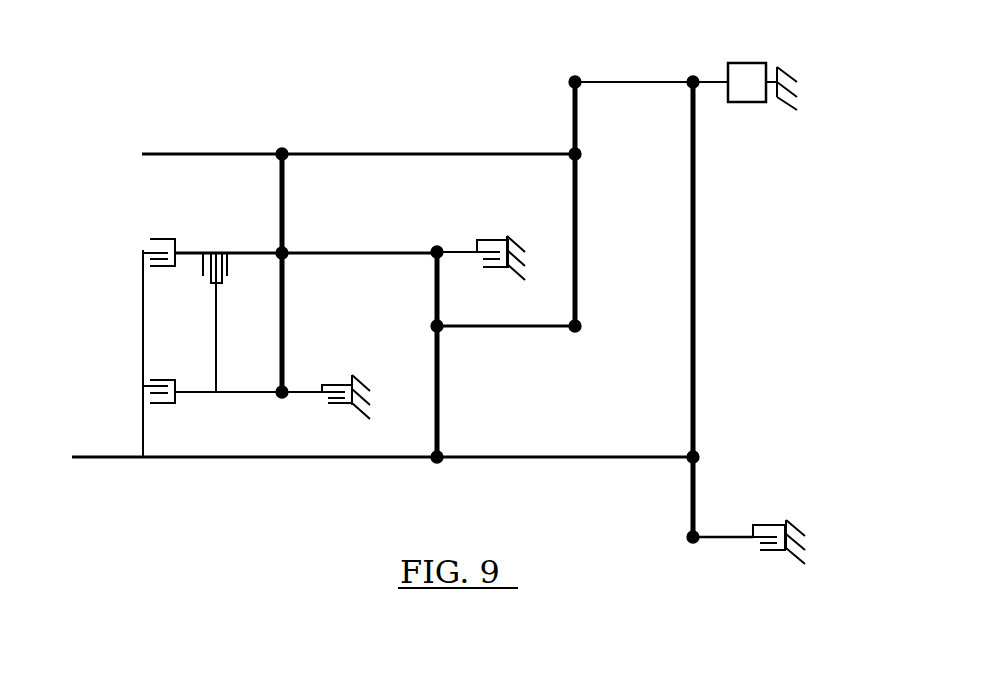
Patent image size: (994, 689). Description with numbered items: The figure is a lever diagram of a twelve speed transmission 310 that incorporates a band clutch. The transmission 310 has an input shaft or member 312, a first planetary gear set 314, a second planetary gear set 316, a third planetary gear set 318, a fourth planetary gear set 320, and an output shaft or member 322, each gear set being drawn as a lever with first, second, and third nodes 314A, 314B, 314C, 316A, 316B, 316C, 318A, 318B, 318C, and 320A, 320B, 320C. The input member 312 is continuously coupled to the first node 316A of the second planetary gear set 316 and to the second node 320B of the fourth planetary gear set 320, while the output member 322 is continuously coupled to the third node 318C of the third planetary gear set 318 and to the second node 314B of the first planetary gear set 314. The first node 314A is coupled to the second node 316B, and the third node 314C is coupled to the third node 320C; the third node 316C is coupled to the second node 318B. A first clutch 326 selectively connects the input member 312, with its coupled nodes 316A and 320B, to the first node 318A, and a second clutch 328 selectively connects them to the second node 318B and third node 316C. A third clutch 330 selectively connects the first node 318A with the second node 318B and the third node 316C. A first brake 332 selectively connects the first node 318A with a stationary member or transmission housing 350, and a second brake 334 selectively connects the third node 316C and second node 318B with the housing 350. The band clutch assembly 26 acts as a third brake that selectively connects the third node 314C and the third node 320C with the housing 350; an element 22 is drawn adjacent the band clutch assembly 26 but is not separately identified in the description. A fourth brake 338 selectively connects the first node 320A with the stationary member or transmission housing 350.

The ground / stationary member 22 is at (793, 63).
The band clutch assembly 26 is at (752, 62).
The transmission 310 is at (788, 211).
The input shaft or member 312 is at (100, 459).
The first planetary gear set 314 is at (550, 122).
The first node of first planetary gear set 314A is at (575, 334).
The second node of first planetary gear set 314B is at (580, 155).
The third node of first planetary gear set 314C is at (575, 74).
The second planetary gear set 316 is at (465, 414).
The first node of second planetary gear set 316A is at (435, 465).
The second node of second planetary gear set 316B is at (430, 326).
The third node of second planetary gear set 316C is at (435, 244).
The third planetary gear set 318 is at (312, 126).
The first node of third planetary gear set 318A is at (280, 400).
The second node of third planetary gear set 318B is at (286, 248).
The third node of third planetary gear set 318C is at (282, 146).
The fourth planetary gear set 320 is at (663, 110).
The first node of fourth planetary gear set 320A is at (686, 536).
The second node of fourth planetary gear set 320B is at (700, 457).
The third node of fourth planetary gear set 320C is at (693, 74).
The output shaft or member 322 is at (178, 156).
The first clutch 326 is at (166, 378).
The second clutch 328 is at (155, 238).
The third clutch 330 is at (230, 266).
The first brake 332 is at (338, 405).
The second brake 334 is at (487, 240).
The fourth brake 338 is at (768, 524).
The stationary member or transmission housing 350 is at (512, 238).